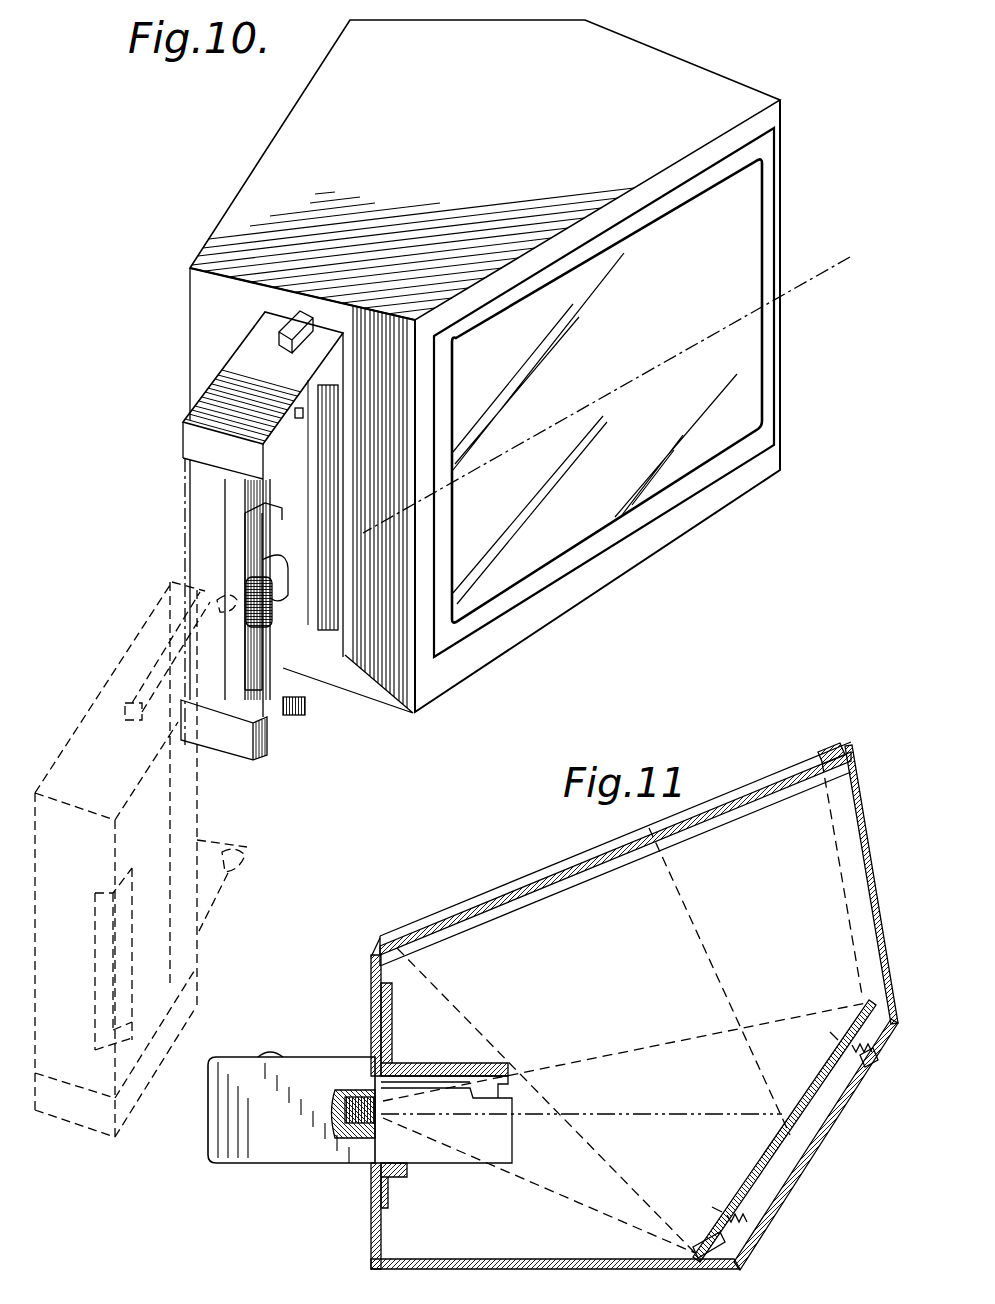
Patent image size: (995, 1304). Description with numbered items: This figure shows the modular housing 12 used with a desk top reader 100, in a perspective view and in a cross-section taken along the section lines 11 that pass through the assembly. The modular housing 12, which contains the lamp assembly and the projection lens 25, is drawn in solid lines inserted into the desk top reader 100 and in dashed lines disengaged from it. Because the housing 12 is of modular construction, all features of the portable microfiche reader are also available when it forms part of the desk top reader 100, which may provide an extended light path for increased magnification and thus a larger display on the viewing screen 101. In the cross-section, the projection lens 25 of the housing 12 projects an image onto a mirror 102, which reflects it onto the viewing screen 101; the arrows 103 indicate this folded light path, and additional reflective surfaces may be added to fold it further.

In FIG. 10, the desk top reader 100 is at (302, 143).
In FIG. 10, the modular housing 12 is at (222, 388).
In FIG. 11, the modular housing 12 is at (314, 1058).
In FIG. 10, the two-part housing 11 is at (850, 257).
In FIG. 10, the viewing screen 101 is at (745, 344).
In FIG. 11, the viewing screen 101 is at (496, 893).
In FIG. 11, the mirror 102 is at (755, 1162).
In FIG. 11, the arrows 103 is at (505, 1047).
In FIG. 11, the projection lens 25 is at (352, 1117).